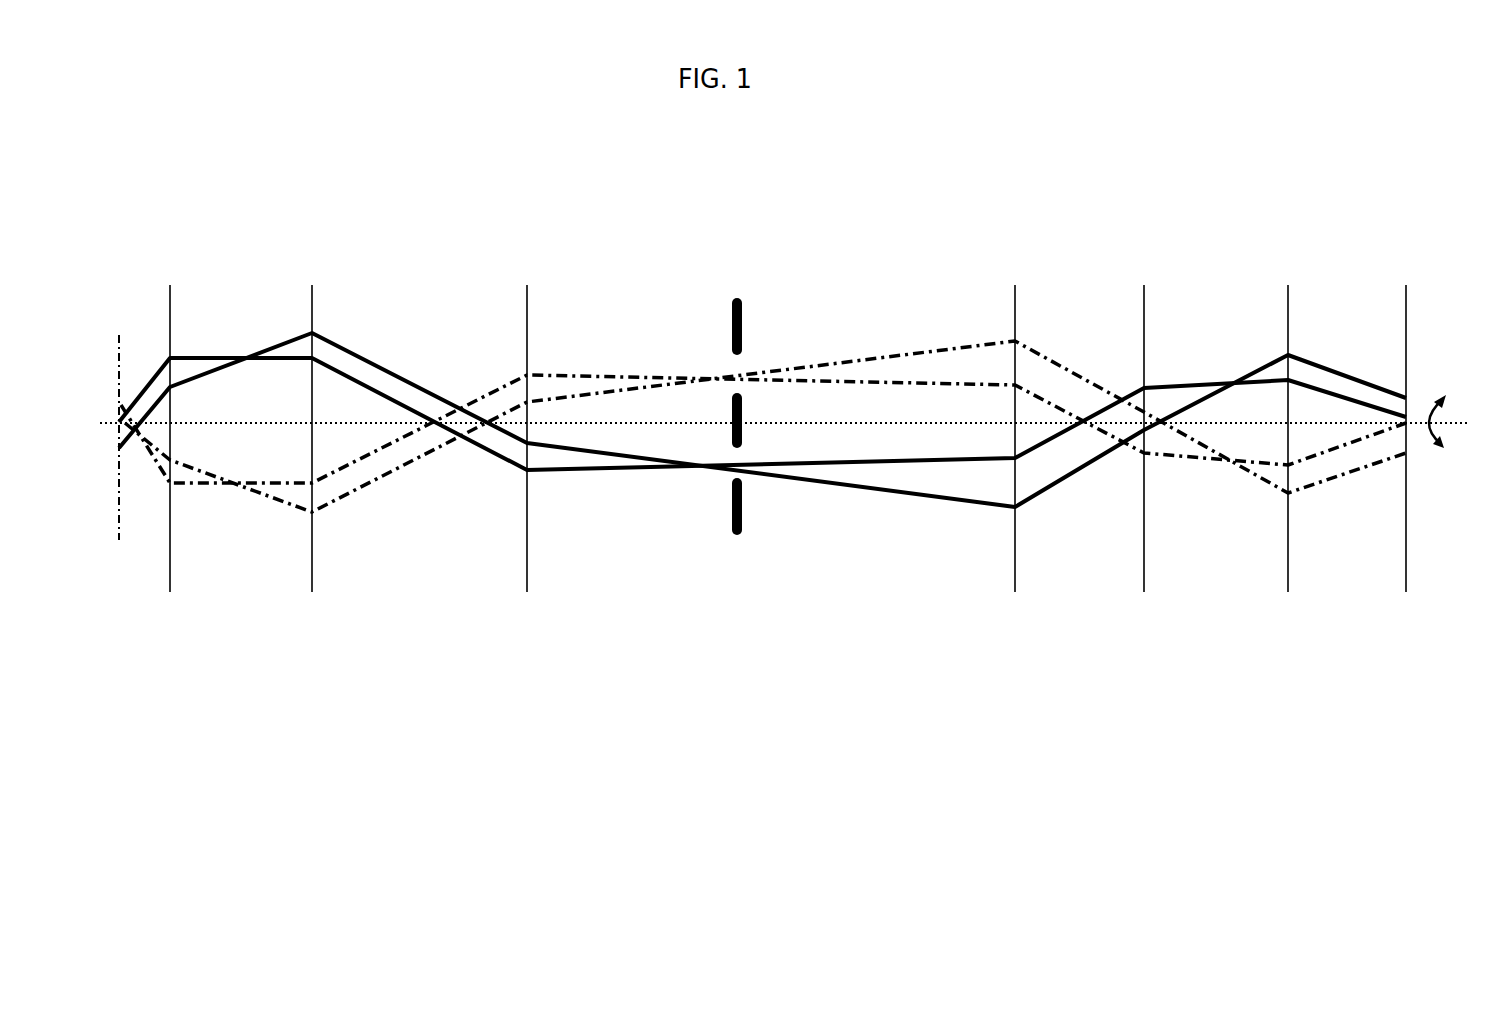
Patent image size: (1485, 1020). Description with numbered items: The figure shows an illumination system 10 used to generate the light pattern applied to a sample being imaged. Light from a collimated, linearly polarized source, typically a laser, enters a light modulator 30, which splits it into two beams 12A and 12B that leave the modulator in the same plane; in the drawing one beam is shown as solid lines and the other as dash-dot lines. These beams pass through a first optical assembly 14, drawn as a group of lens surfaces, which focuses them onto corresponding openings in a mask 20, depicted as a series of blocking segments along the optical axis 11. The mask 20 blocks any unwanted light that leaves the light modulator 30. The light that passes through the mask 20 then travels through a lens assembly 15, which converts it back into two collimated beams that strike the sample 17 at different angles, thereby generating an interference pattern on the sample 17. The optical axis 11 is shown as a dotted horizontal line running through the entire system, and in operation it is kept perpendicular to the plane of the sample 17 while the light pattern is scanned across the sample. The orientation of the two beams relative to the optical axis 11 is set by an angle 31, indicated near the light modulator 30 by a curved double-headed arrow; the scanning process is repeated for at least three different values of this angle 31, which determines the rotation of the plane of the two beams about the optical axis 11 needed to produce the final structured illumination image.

The illumination system 10 is at (250, 143).
The optical axis 11 is at (925, 428).
The first light beam 12A is at (1342, 396).
The second light beam 12B is at (1365, 458).
The first optical assembly 14 is at (1285, 615).
The lens assembly 15 is at (533, 615).
The sample 17 is at (115, 420).
The mask 20 is at (732, 327).
The light modulator 30 is at (1403, 415).
The angle 31 is at (1425, 430).